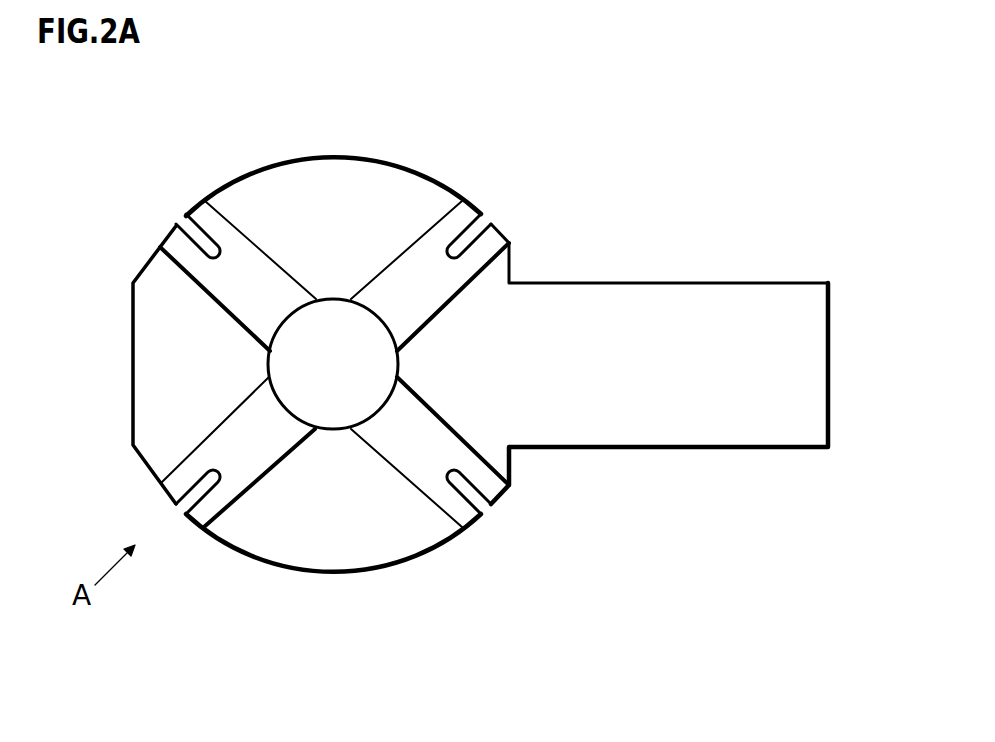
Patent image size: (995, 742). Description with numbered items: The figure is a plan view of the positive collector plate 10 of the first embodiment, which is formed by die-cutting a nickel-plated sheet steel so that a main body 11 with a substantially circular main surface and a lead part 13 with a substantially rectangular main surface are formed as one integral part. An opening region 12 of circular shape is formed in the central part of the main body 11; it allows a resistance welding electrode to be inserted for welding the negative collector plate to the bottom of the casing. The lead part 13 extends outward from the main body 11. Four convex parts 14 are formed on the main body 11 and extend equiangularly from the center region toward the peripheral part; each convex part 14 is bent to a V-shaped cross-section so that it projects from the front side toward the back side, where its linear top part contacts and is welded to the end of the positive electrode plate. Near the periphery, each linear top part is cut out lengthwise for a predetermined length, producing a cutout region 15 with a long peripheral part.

The positive collector plate 10 is at (305, 156).
The main body 11 is at (148, 343).
The opening region 12 is at (288, 363).
The lead part 13 is at (722, 293).
The convex part 14 is at (195, 263).
The cutout region 15 is at (490, 213).